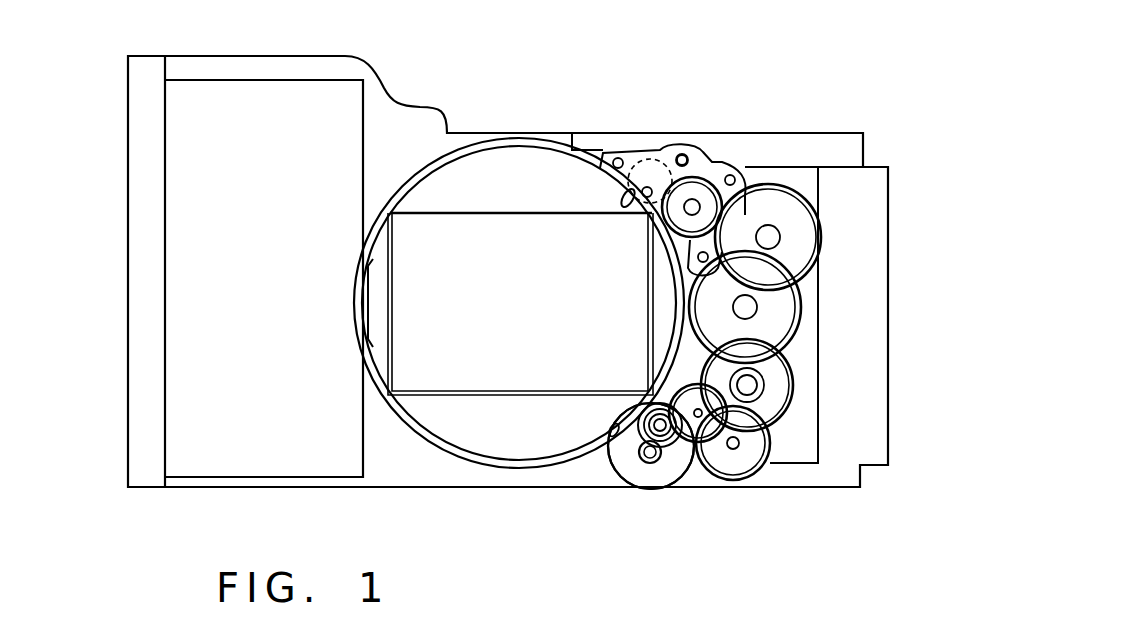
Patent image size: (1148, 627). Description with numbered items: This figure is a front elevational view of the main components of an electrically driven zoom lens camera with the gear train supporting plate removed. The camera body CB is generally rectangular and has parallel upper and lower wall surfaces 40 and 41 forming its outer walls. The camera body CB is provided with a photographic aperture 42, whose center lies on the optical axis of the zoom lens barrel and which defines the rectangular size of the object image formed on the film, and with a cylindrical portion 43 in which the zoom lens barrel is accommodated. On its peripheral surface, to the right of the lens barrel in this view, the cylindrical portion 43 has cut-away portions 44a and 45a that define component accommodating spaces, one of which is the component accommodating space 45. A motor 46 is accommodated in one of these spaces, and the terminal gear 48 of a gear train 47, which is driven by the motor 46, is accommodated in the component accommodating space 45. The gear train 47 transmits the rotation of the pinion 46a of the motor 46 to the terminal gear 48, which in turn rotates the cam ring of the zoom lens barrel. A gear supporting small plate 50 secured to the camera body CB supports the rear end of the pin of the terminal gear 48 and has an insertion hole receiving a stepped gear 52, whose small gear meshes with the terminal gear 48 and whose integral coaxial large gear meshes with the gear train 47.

The camera body CB is at (308, 118).
The upper wall surface 40 is at (590, 134).
The lower wall surface 41 is at (392, 489).
The photographic aperture 42 is at (532, 228).
The cylindrical portion 43 is at (477, 146).
The cut-away portion 44a is at (630, 212).
The component accommodating space 45 is at (651, 446).
The cut-away portion 45a is at (616, 425).
The motor 46 is at (667, 478).
The pinion 46a is at (647, 464).
The gear train 47 is at (825, 482).
The terminal gear 48 is at (652, 164).
The gear supporting small plate 50 is at (686, 150).
The stepped gear 52 is at (703, 192).